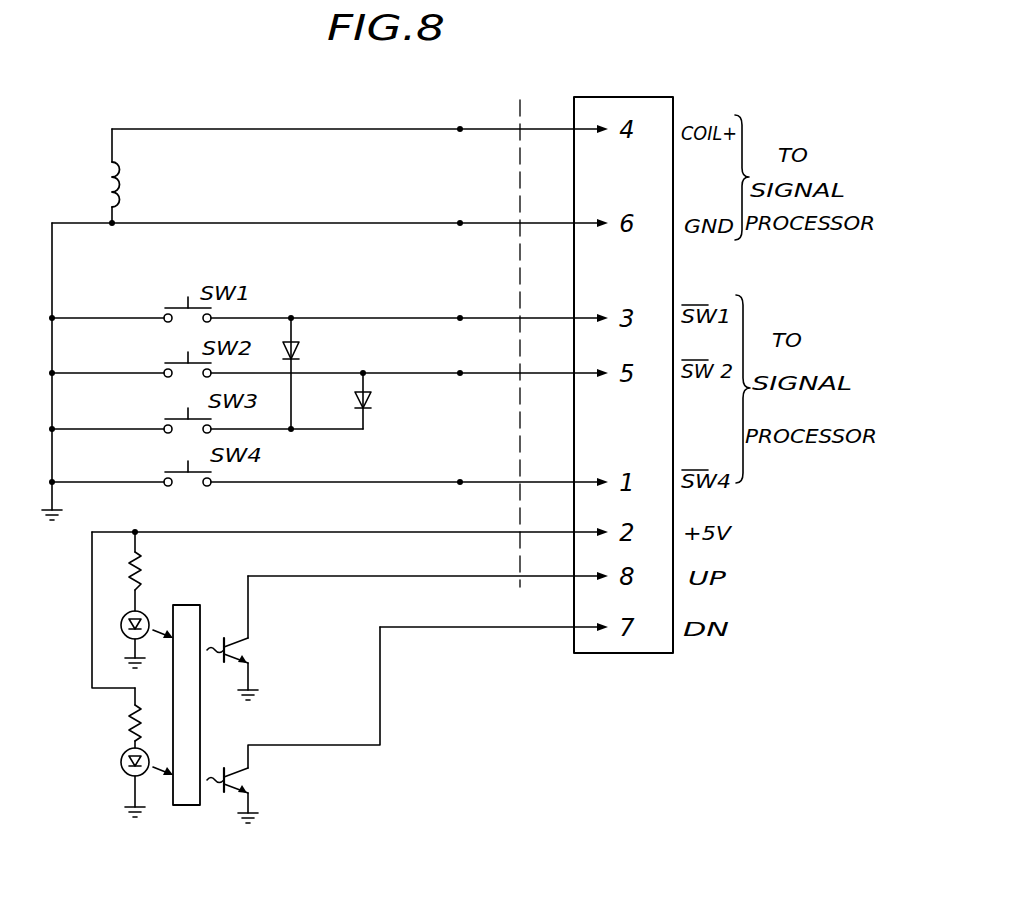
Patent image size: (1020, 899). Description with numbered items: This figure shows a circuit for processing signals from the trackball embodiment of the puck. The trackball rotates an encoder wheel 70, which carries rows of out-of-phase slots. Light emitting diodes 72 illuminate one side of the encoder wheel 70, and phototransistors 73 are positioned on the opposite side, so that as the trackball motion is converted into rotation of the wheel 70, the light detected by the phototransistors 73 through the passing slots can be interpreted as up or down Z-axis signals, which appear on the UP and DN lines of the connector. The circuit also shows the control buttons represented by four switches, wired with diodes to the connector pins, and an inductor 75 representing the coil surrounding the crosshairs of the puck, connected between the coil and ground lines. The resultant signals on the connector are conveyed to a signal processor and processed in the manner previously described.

The encoder wheel 70 is at (192, 806).
The light emitting diodes 72 is at (121, 631).
The phototransistors 73 is at (236, 650).
The inductor 75 is at (110, 182).